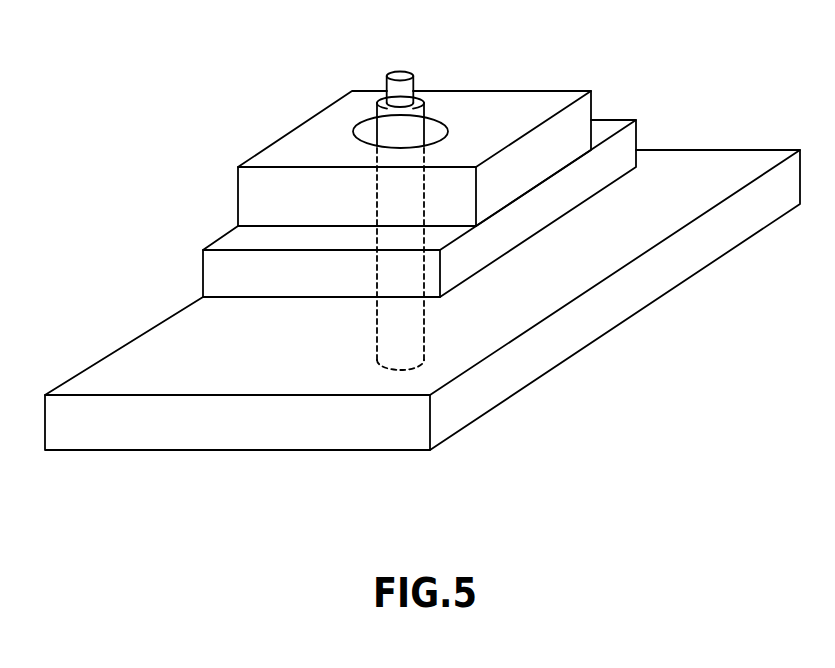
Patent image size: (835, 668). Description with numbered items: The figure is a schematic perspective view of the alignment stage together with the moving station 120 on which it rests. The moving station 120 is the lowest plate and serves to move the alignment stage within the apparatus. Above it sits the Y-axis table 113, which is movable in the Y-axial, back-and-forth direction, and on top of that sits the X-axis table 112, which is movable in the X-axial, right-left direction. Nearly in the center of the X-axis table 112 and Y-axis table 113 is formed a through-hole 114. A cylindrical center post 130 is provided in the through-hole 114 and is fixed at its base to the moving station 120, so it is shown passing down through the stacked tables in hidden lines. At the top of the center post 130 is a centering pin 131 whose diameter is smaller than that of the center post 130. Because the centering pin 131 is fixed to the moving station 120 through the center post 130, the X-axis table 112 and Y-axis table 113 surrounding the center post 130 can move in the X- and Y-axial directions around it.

The X-axis table 112 is at (583, 120).
The Y-axis table 113 is at (625, 148).
The through-hole 114 is at (442, 122).
The moving station 120 is at (632, 303).
The center post 130 is at (426, 325).
The centering pin 131 is at (403, 70).